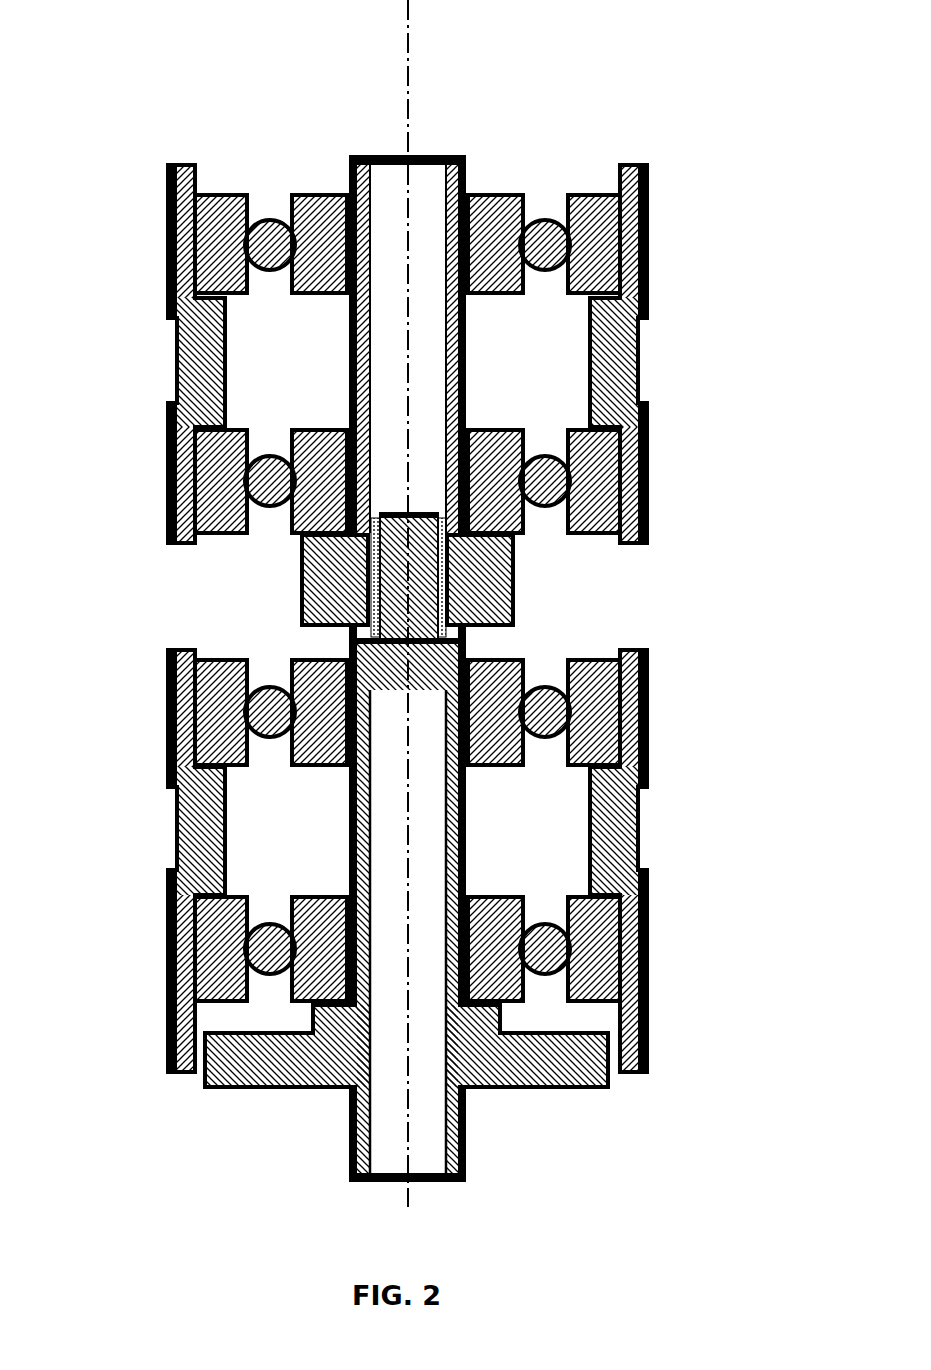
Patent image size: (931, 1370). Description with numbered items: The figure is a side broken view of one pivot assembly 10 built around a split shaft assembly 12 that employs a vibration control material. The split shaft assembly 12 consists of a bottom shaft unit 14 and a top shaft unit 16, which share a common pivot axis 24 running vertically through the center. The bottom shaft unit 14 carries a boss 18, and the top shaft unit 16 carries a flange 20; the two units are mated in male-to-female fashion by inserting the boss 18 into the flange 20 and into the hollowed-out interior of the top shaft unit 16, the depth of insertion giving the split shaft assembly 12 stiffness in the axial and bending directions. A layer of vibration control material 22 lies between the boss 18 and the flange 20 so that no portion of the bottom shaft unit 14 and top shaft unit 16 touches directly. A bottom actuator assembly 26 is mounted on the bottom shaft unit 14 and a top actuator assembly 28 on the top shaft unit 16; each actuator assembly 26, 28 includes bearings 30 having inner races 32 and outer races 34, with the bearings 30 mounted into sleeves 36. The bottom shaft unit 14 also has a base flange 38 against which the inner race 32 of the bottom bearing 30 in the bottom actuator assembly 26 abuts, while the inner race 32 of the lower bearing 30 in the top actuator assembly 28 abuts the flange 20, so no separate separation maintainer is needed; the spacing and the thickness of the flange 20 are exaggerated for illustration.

The pivot assembly 10 is at (692, 82).
The split shaft assembly 12 is at (357, 118).
The bottom shaft unit 14 is at (500, 1070).
The top shaft unit 16 is at (462, 156).
The boss 18 is at (417, 567).
The flange 20 is at (327, 582).
The vibration control material 22 is at (467, 633).
The pivot axis 24 is at (410, 42).
The bottom actuator assembly 26 is at (124, 826).
The top actuator assembly 28 is at (130, 349).
The bearing 30 is at (242, 152).
The inner race 32 is at (318, 300).
The outer race 34 is at (218, 538).
The sleeve 36 is at (640, 830).
The base flange 38 is at (288, 1068).